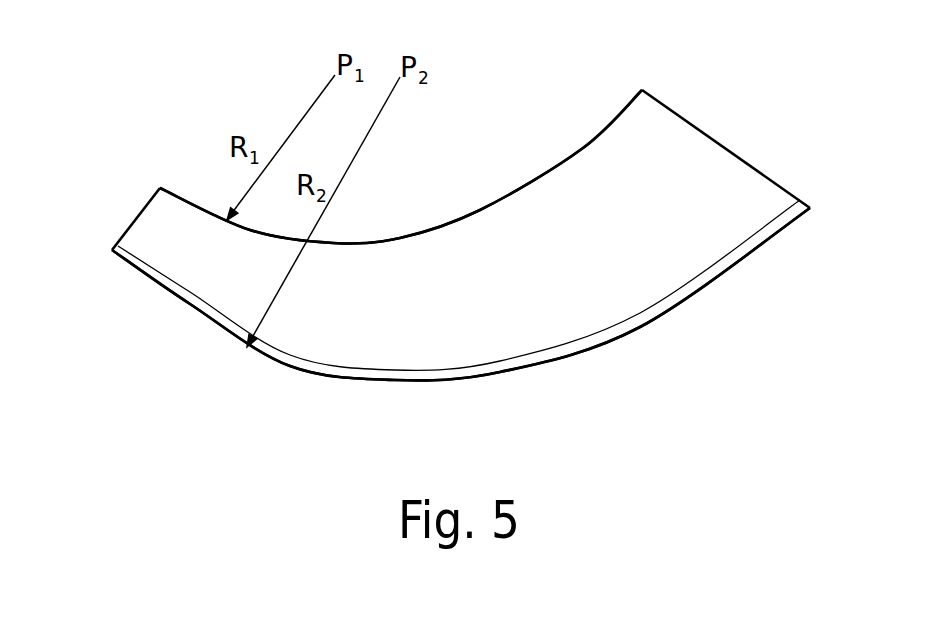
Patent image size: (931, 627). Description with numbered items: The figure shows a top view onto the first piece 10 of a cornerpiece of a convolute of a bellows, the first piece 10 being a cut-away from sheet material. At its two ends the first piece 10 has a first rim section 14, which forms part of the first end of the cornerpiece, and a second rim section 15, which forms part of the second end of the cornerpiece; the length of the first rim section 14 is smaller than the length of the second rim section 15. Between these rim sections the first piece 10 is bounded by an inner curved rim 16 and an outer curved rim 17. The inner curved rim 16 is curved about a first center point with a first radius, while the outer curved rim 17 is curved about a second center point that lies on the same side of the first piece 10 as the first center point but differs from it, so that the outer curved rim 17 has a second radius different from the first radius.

The first piece 10 is at (563, 242).
The first rim section 14 is at (138, 214).
The second rim section 15 is at (727, 148).
The inner curved rim 16 is at (437, 222).
The outer curved rim 17 is at (440, 382).